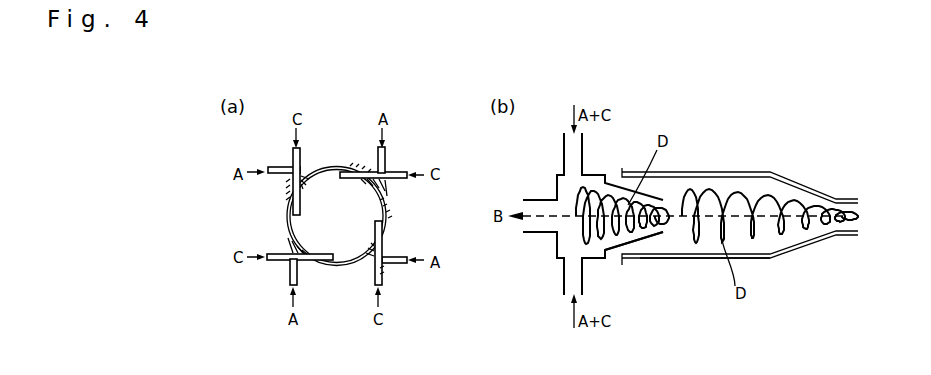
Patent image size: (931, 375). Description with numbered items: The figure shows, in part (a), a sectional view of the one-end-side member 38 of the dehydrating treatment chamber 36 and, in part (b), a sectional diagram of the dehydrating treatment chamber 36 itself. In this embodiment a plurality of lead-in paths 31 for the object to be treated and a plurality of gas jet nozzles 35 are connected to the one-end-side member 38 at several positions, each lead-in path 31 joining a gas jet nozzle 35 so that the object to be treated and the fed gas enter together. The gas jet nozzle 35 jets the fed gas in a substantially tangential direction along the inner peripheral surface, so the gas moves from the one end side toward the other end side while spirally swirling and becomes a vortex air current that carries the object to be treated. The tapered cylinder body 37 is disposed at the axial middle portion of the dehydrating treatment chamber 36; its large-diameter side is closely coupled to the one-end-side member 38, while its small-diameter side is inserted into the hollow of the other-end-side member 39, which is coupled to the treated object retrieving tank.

The lead-in path for the object to be treated 31 is at (388, 156).
The gas jet nozzle 35 is at (388, 183).
The dehydrating treatment chamber 36 is at (743, 156).
The tapered cylinder body 37 is at (638, 247).
The one-end-side member 38 is at (320, 165).
The other-end-side member 39 is at (680, 259).